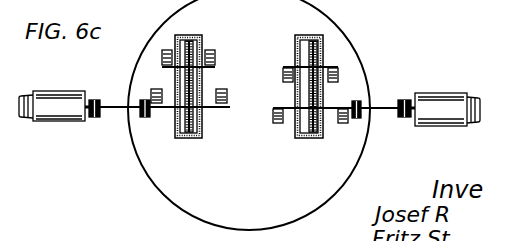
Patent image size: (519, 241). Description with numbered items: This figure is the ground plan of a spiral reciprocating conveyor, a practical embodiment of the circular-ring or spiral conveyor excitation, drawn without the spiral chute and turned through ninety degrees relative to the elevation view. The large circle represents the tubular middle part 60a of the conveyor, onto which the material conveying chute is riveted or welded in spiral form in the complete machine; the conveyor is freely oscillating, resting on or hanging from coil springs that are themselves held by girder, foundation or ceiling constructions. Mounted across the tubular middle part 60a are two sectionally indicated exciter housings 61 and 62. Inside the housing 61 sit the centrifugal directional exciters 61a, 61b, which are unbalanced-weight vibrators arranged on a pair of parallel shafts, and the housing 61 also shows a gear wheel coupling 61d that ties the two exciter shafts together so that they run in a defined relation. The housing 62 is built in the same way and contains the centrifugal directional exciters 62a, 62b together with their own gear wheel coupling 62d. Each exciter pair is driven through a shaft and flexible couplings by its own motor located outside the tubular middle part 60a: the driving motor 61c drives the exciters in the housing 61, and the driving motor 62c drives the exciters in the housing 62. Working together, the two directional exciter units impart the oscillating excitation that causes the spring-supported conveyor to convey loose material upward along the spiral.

The tubular middle part 60a is at (355, 35).
The housing 61 is at (170, 96).
The centrifugal directional exciter 61a is at (210, 50).
The centrifugal directional exciter 61b is at (221, 91).
The driving motor 61c is at (58, 92).
The gear wheel coupling 61d is at (179, 71).
The housing 62 is at (328, 102).
The centrifugal directional exciter 62a is at (283, 73).
The centrifugal directional exciter 62b is at (280, 124).
The driving motor 62c is at (443, 84).
The gear wheel coupling 62d is at (322, 92).